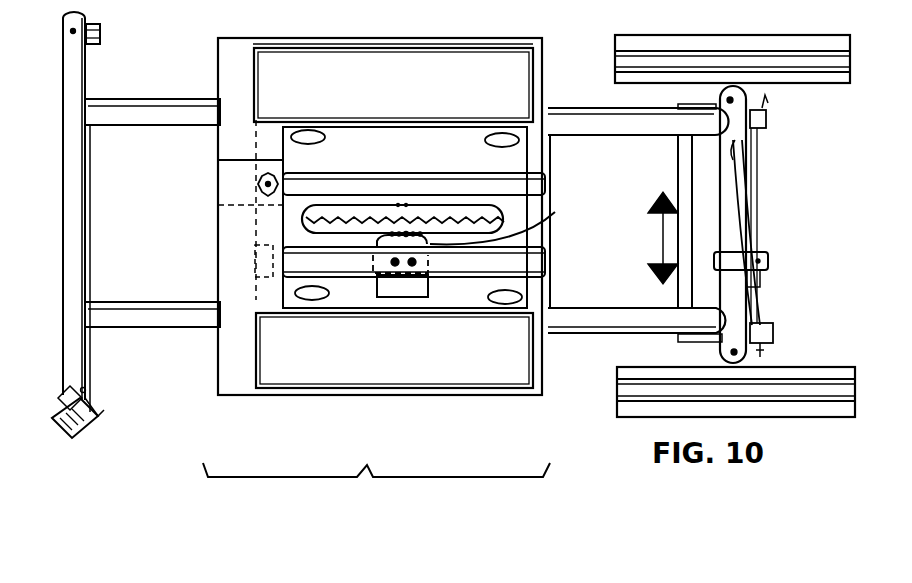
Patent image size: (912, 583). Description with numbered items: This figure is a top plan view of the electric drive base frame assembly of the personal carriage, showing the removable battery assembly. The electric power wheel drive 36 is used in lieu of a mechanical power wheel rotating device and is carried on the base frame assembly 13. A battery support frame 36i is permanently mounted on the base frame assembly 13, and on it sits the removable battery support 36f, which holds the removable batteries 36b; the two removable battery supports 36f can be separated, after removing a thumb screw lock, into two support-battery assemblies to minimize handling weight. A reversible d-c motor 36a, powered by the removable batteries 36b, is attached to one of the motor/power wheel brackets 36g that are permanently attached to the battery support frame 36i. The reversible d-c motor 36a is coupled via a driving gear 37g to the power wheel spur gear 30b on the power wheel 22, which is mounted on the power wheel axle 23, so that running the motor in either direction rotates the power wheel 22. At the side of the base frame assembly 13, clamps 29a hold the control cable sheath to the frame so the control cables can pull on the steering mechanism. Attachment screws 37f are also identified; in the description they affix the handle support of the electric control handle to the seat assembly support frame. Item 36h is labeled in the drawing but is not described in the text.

The base frame assembly 13 is at (72, 82).
The removable battery support 36f is at (230, 47).
The attachment screws 37f is at (393, 22).
The removable batteries 36b is at (485, 66).
The nut 36h is at (257, 182).
The motor/power wheel bracket 36g is at (542, 183).
The power wheel 22 is at (296, 208).
The driving gear 37g is at (558, 213).
The power wheel axle 23 is at (407, 188).
The power wheel spur gear 30b is at (393, 257).
The reversible d-c motor 36a is at (398, 283).
The battery support frame 36i is at (538, 300).
The electric power wheel drive 36 is at (376, 455).
The clamps 29a is at (768, 243).